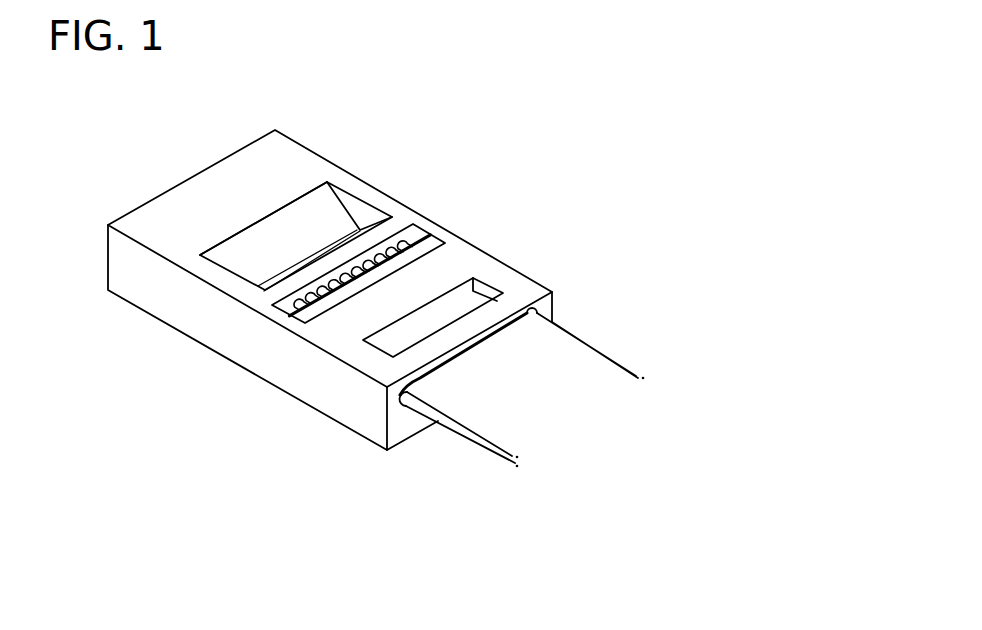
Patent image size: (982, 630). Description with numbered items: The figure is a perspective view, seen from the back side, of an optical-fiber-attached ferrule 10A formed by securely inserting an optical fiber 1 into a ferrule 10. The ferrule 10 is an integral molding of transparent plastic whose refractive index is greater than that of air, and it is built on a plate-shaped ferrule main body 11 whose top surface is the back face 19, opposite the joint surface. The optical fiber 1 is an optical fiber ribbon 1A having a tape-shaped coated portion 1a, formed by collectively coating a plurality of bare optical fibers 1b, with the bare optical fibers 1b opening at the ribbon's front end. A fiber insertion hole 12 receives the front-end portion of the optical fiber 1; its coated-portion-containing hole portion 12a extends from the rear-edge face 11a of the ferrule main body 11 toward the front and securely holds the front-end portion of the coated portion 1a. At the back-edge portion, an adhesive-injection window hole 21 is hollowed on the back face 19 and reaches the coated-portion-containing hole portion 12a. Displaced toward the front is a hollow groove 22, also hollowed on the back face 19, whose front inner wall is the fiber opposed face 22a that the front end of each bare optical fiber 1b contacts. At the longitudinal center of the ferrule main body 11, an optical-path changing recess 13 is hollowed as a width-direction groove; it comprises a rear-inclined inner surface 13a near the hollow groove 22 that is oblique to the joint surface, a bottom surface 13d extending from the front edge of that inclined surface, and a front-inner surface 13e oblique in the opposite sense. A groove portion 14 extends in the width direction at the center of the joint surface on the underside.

The optical fiber 1 is at (623, 311).
The optical fiber ribbon 1A is at (607, 354).
The coated portion 1a is at (634, 371).
The bare optical fibers 1b is at (355, 293).
The ferrule 10 is at (462, 229).
The optical-fiber-attached ferrule 10A is at (597, 196).
The ferrule main body 11 is at (540, 277).
The rear-edge face 11a is at (402, 425).
The fiber insertion hole 12 is at (466, 461).
The coated-portion-containing hole portion 12a is at (415, 385).
The optical-path changing recess 13 is at (353, 215).
The rear-inclined inner surface 13a is at (368, 230).
The bottom surface 13d is at (333, 242).
The front-inner surface 13e is at (298, 223).
The groove portion 14 is at (228, 363).
The back face 19 is at (232, 172).
The adhesive-injection window hole 21 is at (457, 302).
The hollow groove 22 is at (426, 238).
The fiber opposed face 22a is at (449, 243).